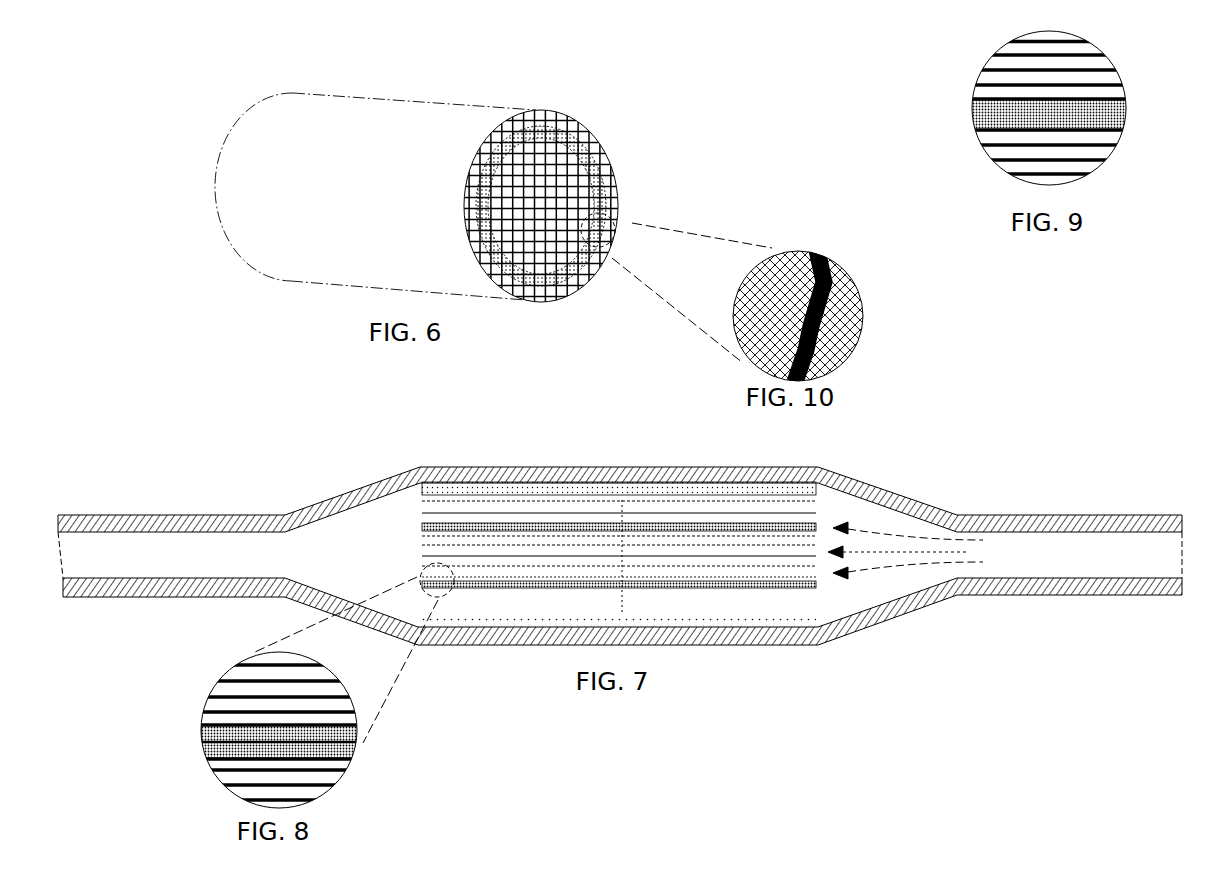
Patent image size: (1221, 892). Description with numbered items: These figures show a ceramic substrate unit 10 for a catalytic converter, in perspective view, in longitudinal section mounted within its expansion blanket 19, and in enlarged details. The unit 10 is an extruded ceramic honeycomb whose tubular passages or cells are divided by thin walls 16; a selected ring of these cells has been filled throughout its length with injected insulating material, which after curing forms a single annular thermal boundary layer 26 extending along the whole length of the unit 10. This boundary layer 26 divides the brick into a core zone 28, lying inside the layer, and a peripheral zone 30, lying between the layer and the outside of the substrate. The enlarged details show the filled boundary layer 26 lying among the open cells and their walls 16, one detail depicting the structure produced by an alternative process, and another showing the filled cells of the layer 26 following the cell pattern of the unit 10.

In FIG. 6, the unit 10 is at (459, 127).
In FIG. 9, the walls 16 is at (1038, 83).
In FIG. 8, the walls 16 is at (232, 722).
In FIG. 7, the expansion blanket 19 is at (640, 481).
In FIG. 6, the thermal boundary layer 26 is at (462, 190).
In FIG. 9, the thermal boundary layer 26 is at (1033, 122).
In FIG. 7, the thermal boundary layer 26 is at (443, 527).
In FIG. 8, the thermal boundary layer 26 is at (223, 758).
In FIG. 7, the core zone 28 is at (525, 552).
In FIG. 7, the peripheral zone 30 is at (563, 505).